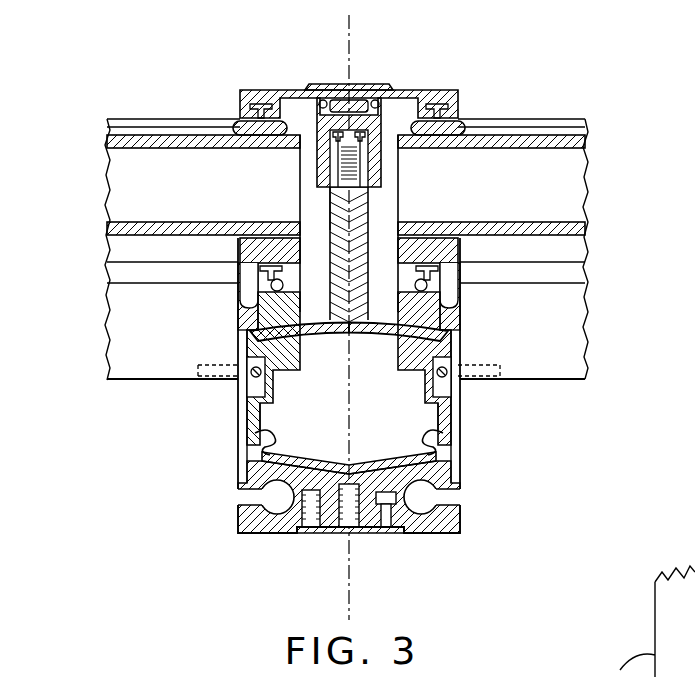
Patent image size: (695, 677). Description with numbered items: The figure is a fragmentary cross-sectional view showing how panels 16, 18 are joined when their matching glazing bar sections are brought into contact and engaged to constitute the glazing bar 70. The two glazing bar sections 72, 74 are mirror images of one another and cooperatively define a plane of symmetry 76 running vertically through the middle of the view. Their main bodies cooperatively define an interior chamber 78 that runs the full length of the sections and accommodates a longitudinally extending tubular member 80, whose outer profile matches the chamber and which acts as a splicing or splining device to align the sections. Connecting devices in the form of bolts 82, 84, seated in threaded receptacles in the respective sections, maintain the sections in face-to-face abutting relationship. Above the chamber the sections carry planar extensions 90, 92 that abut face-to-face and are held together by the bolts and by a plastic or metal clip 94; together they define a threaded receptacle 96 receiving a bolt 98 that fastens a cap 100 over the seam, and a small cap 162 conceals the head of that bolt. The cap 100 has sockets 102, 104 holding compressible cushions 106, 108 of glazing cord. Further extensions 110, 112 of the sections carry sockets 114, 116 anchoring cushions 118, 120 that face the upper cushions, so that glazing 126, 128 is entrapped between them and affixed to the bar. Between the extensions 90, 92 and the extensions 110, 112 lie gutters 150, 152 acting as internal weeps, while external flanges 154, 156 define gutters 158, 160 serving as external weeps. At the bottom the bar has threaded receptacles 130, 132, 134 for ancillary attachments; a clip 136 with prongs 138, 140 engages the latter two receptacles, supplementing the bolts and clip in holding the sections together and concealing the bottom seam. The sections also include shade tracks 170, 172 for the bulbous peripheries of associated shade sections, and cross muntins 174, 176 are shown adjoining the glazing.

The panel 16 is at (557, 82).
The panel 18 is at (157, 100).
The glazing bar 70 is at (218, 474).
The glazing bar section 72 is at (461, 409).
The glazing bar section 74 is at (238, 434).
The plane of symmetry 76 is at (345, 85).
The interior chamber 78 is at (276, 421).
The tubular member 80 is at (443, 431).
The connecting device 82 is at (224, 364).
The connecting device 84 is at (496, 364).
The extension 90 is at (370, 212).
The extension 92 is at (324, 230).
The clip 94 is at (381, 160).
The threaded receptacle 96 is at (330, 196).
The bolt 98 is at (336, 160).
The cap 100 is at (262, 89).
The socket 102 is at (251, 104).
The socket 104 is at (437, 100).
The cushion 106 is at (243, 137).
The cushion 108 is at (467, 136).
The extension 110 is at (418, 300).
The extension 112 is at (292, 300).
The socket 114 is at (437, 270).
The socket 116 is at (261, 270).
The cushion 118 is at (462, 238).
The cushion 120 is at (240, 252).
The glazing 126 is at (562, 178).
The glazing 128 is at (123, 197).
The threaded receptacle 130 is at (355, 530).
The threaded receptacle 132 is at (388, 522).
The threaded receptacle 134 is at (318, 528).
The clip 136 is at (333, 537).
The prong 138 is at (305, 508).
The prong 140 is at (400, 510).
The gutter 150 is at (380, 300).
The gutter 152 is at (320, 300).
The external flange 154 is at (462, 294).
The external flange 156 is at (248, 286).
The gutter 158 is at (450, 302).
The gutter 160 is at (247, 310).
The cap 162 is at (353, 86).
The shade track 170 is at (430, 500).
The shade track 172 is at (262, 500).
The cross muntin 174 is at (572, 364).
The cross muntin 176 is at (151, 370).